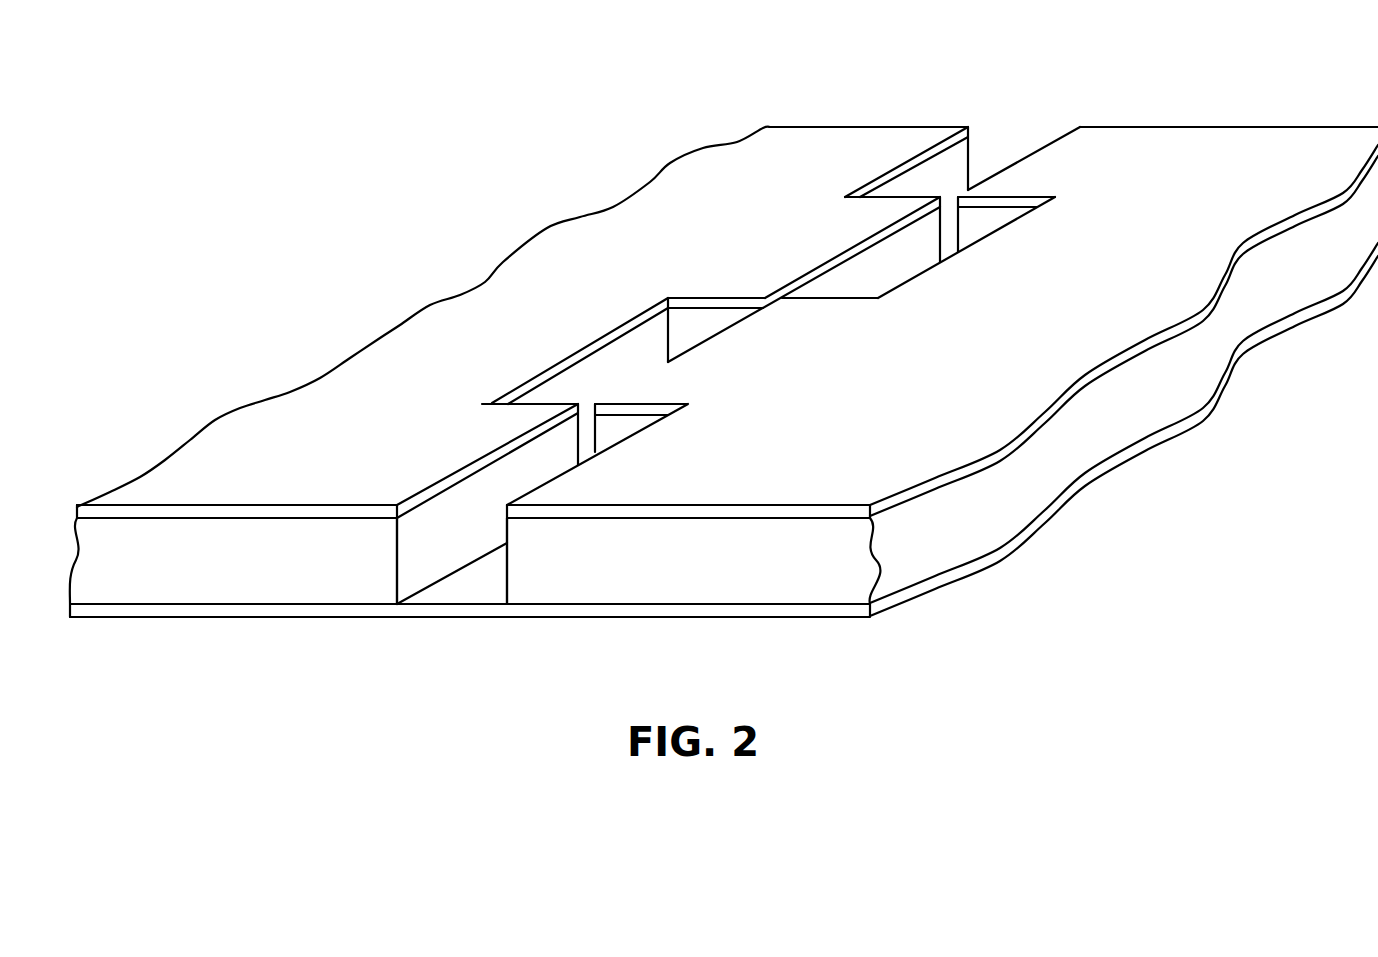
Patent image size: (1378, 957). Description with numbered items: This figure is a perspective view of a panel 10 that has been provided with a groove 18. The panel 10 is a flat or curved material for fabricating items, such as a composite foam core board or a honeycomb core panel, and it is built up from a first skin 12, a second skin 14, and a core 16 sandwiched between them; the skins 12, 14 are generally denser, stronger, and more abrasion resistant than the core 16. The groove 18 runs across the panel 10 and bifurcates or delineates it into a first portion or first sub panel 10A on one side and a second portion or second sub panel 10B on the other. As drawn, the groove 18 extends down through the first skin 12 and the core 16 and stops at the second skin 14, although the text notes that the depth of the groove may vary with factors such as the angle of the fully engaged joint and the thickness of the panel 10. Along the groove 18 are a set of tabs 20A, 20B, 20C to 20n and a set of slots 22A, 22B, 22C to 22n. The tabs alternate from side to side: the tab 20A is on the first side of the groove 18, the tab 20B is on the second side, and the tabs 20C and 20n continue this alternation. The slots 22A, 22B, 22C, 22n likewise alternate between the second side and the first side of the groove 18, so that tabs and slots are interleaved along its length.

The panel 10 is at (403, 244).
The first sub panel 10A is at (198, 641).
The second sub panel 10B is at (735, 645).
The first skin 12 is at (250, 509).
The second skin 14 is at (250, 611).
The core 16 is at (323, 575).
The groove 18 is at (476, 496).
The tab 20A is at (498, 425).
The tab 20B is at (713, 363).
The tab 20C is at (800, 247).
The tab 20n is at (1027, 168).
The slot 22A is at (558, 464).
The slot 22B is at (627, 352).
The slot 22C is at (895, 270).
The slot 22n is at (952, 170).